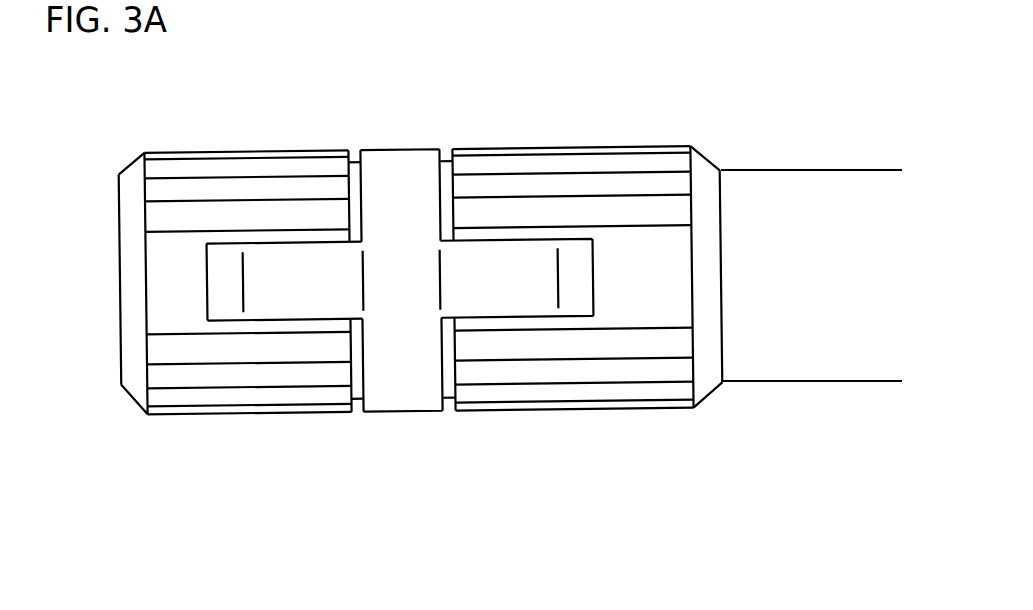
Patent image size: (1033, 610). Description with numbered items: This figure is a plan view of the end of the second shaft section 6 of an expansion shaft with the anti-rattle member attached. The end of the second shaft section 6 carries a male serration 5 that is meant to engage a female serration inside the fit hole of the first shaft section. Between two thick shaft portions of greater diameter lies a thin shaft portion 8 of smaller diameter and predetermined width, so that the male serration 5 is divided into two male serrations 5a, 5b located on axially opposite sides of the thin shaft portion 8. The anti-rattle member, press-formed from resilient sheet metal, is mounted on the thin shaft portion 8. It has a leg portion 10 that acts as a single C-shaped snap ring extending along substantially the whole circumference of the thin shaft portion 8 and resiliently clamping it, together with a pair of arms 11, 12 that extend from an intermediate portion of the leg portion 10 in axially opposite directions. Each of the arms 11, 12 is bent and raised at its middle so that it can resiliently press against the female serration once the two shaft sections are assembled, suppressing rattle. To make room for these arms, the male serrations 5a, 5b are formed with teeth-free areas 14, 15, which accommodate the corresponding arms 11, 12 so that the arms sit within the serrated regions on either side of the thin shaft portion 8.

The male serration 5 is at (498, 508).
The male serration 5a is at (298, 395).
The male serration 5b is at (490, 392).
The second shaft section 6 is at (812, 170).
The thin shaft portion 8 is at (452, 205).
The leg portion 10 is at (377, 192).
The arm 11 is at (290, 262).
The arm 12 is at (514, 262).
The teeth-free area 14 is at (170, 292).
The teeth-free area 15 is at (668, 280).